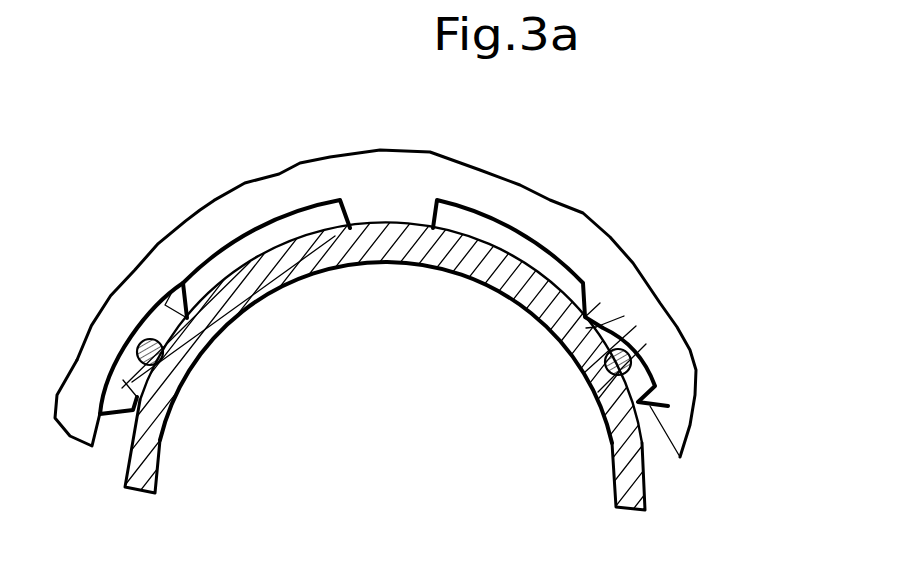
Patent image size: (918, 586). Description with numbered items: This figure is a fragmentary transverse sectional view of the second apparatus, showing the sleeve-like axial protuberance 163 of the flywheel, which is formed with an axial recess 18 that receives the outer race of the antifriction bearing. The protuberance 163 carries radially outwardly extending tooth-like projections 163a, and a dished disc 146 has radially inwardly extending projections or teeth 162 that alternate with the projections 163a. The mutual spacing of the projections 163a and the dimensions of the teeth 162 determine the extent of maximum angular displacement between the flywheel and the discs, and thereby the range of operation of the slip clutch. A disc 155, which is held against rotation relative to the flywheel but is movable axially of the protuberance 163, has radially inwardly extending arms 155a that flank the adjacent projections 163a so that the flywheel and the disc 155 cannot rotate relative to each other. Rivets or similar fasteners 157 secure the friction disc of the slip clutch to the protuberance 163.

The dished disc 146 is at (232, 210).
The radially inwardly extending projections or teeth 162 is at (378, 192).
The sleeve-like axial protuberance 163 is at (493, 270).
The radially outwardly extending tooth-like projections 163a is at (605, 337).
The disc 155 is at (652, 405).
The radially inwardly extending arms 155a is at (597, 303).
The rivets or similar fasteners 157 is at (140, 342).
The axial recess 18 is at (608, 437).